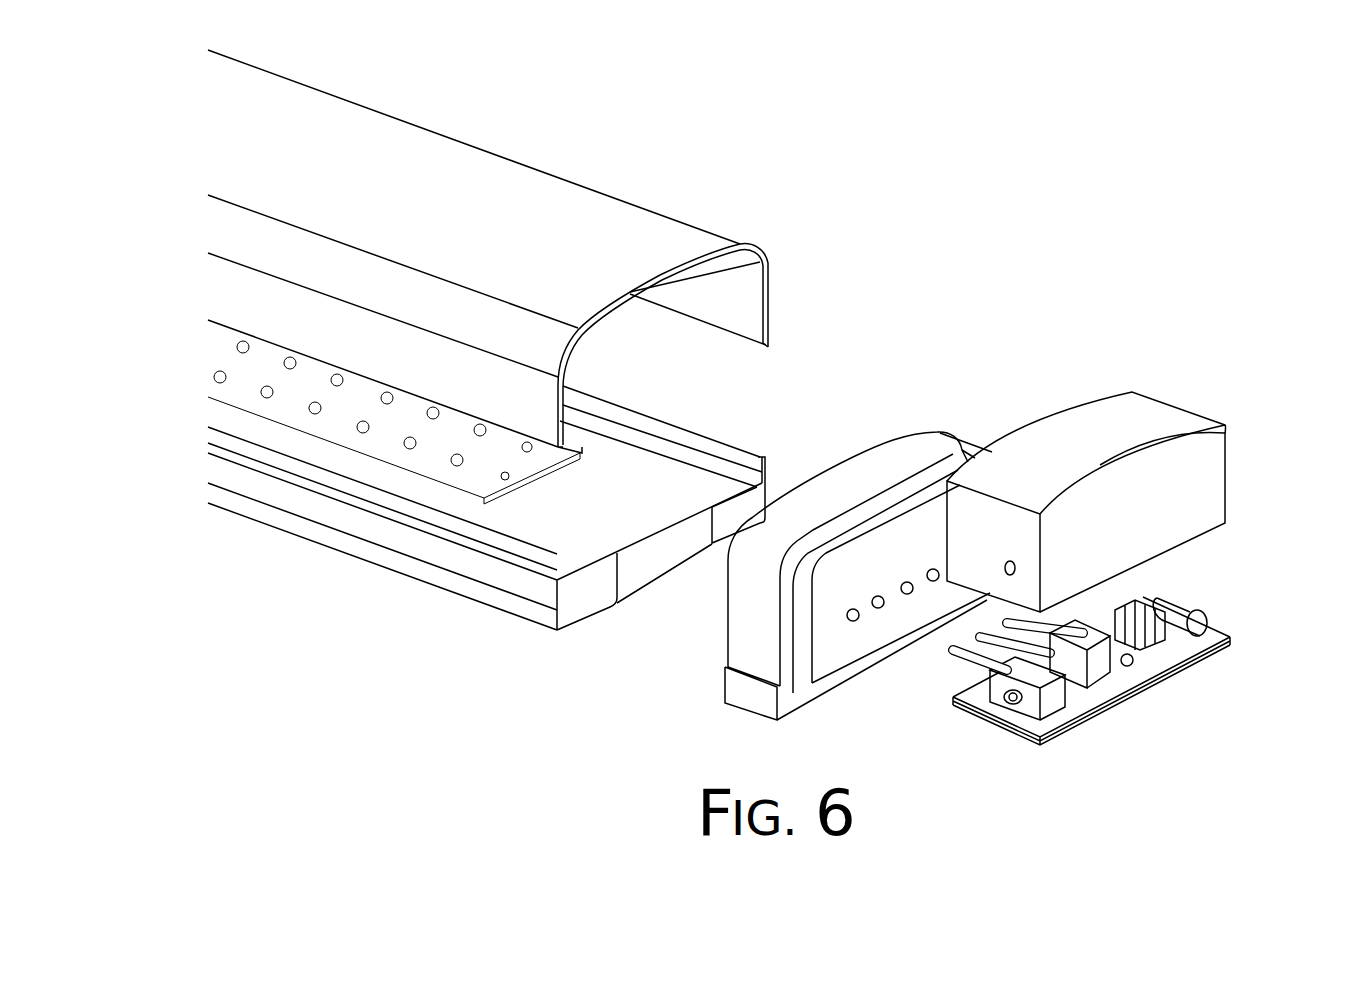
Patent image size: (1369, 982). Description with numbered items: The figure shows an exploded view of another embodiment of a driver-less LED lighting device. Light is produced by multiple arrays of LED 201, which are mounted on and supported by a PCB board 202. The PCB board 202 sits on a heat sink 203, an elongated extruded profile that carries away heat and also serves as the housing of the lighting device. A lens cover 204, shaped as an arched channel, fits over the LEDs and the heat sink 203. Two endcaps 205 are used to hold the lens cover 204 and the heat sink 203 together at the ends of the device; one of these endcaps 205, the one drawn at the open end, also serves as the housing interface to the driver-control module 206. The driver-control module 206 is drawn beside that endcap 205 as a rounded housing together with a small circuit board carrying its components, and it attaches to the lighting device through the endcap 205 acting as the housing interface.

The arrays of LED 201 is at (410, 453).
The PCB board 202 is at (486, 498).
The heat sink 203 is at (600, 517).
The lens cover 204 is at (632, 258).
The endcap 205 is at (878, 462).
The driver-control module 206 is at (1170, 520).